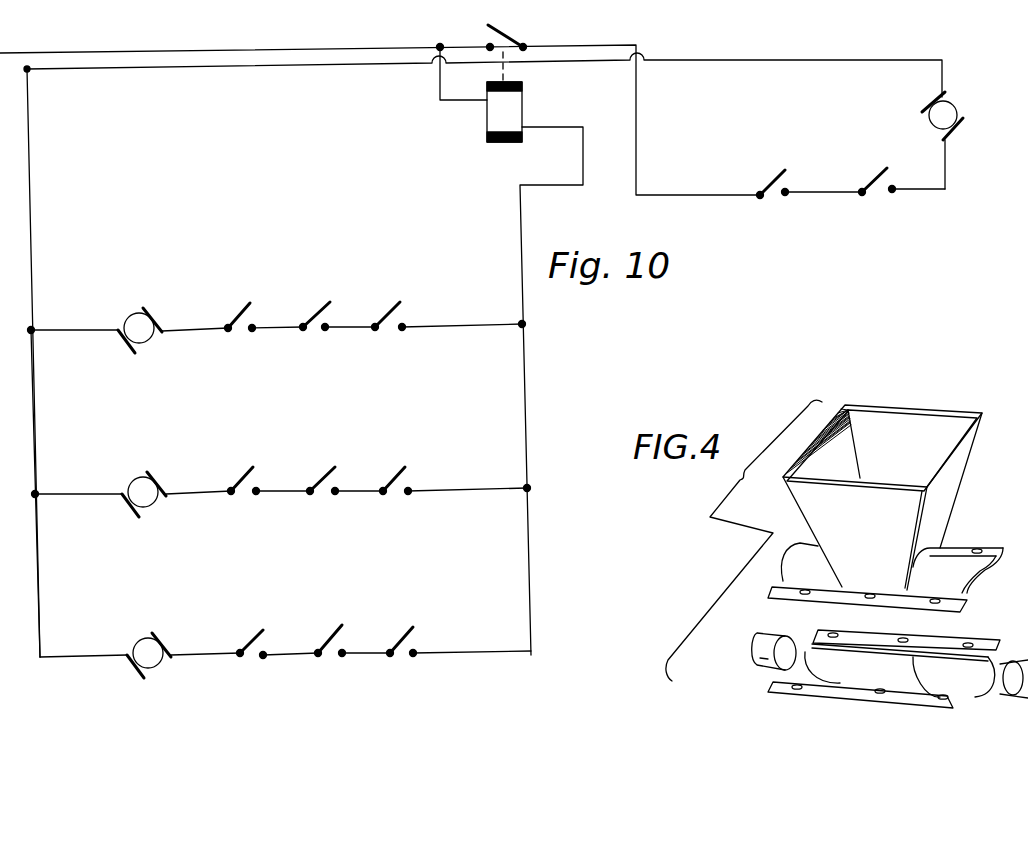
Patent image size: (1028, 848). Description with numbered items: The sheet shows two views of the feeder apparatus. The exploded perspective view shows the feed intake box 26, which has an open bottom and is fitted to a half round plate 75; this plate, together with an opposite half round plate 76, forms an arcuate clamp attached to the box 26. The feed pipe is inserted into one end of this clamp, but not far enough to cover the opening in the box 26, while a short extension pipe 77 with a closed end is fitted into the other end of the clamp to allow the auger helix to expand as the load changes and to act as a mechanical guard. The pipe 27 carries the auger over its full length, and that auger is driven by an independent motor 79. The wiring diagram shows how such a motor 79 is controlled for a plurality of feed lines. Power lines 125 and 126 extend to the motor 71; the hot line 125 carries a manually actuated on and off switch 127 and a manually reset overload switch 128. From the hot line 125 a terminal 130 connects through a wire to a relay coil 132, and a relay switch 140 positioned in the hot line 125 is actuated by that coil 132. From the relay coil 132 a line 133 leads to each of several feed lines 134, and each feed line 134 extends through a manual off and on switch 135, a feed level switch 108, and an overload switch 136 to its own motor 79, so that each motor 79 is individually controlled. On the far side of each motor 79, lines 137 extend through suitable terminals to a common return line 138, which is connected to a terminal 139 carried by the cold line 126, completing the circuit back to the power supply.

In FIG. 10, the hot line 125 is at (338, 49).
In FIG. 10, the cold line 126 is at (338, 64).
In FIG. 10, the terminal 130 is at (458, 60).
In FIG. 10, the relay switch 140 is at (513, 34).
In FIG. 10, the relay coil 132 is at (487, 114).
In FIG. 10, the terminal 139 is at (30, 72).
In FIG. 10, the return line 138 is at (30, 226).
In FIG. 10, the line 133 is at (522, 288).
In FIG. 10, the motor 71 is at (958, 106).
In FIG. 10, the on and off switch 127 is at (783, 173).
In FIG. 10, the overload switch 128 is at (879, 173).
In FIG. 10, the lines 137 is at (57, 331).
In FIG. 10, the motor 79 is at (134, 311).
In FIG. 10, the overload switch 136 is at (242, 306).
In FIG. 10, the feed level switch 108 is at (323, 312).
In FIG. 10, the off and on switch 135 is at (405, 468).
In FIG. 10, the feed line 134 is at (446, 326).
In FIG. 4, the feed box 26 is at (950, 497).
In FIG. 4, the half round plate 75 is at (945, 557).
In FIG. 4, the half round plate 76 is at (893, 695).
In FIG. 4, the extension pipe 77 is at (787, 640).
In FIG. 4, the pipe 27 is at (993, 694).